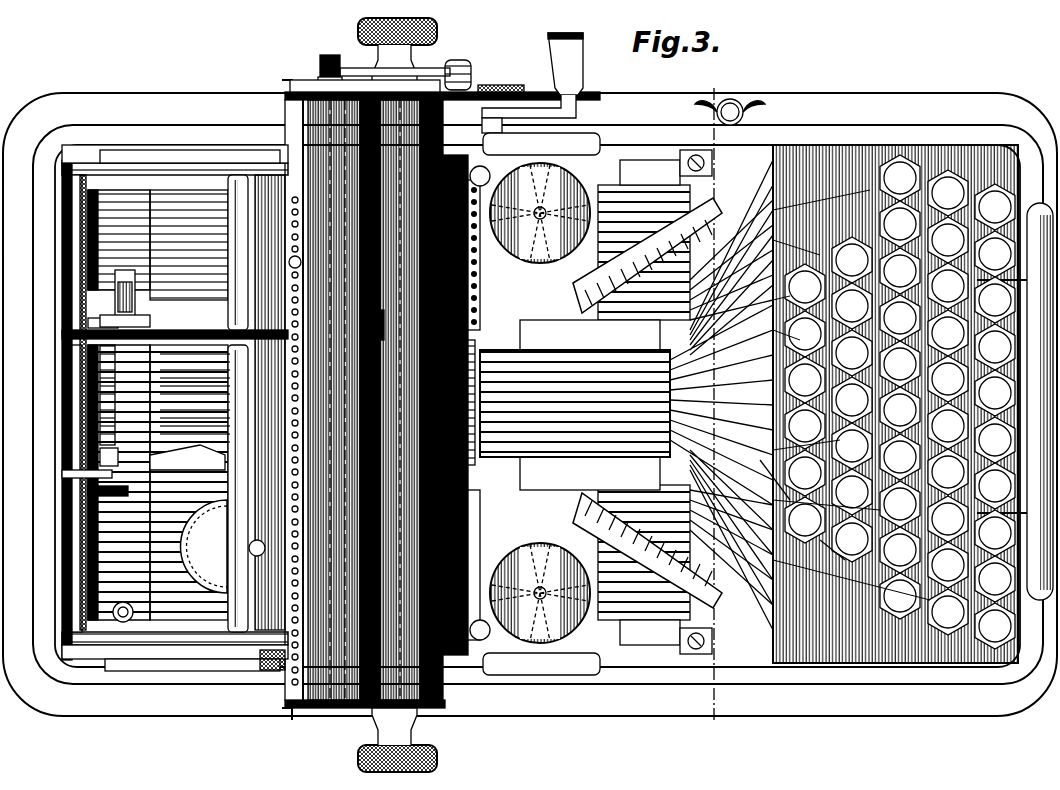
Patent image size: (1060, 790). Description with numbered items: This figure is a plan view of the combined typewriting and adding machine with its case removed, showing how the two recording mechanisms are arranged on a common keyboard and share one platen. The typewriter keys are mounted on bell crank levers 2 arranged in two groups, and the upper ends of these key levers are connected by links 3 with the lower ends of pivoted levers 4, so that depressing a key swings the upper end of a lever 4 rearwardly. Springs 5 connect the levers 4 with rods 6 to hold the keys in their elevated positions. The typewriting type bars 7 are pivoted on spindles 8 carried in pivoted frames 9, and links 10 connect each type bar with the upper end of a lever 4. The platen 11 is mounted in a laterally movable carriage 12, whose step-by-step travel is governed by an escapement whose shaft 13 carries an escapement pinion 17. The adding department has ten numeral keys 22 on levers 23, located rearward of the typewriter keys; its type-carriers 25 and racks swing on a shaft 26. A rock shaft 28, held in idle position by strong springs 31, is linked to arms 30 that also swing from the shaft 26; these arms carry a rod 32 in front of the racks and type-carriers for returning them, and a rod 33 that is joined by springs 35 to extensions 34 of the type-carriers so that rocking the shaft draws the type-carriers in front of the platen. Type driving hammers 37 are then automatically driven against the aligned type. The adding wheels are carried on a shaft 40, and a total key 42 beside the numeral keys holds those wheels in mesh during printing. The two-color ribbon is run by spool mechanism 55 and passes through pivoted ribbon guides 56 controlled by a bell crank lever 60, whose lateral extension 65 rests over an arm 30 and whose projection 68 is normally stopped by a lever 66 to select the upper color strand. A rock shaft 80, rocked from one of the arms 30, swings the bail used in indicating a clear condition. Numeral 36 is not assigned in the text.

The bell crank levers 2 is at (735, 235).
The links 3 is at (610, 315).
The levers 4 is at (130, 200).
The springs 5 is at (730, 410).
The rods 6 is at (440, 524).
The typewriting type bars 7 is at (940, 575).
The spindles 8 is at (440, 240).
The pivoted frames 9 is at (440, 270).
The links 10 is at (298, 243).
The platen 11 is at (355, 425).
The carriage 12 is at (284, 98).
The rod or shaft 13 is at (168, 648).
The escapement pinion 17 is at (85, 303).
The numeral keys 22 is at (818, 270).
The key levers 23 is at (700, 370).
The type-carriers 25 is at (392, 372).
The shaft 26 is at (298, 298).
The rock shaft 28 is at (520, 82).
The arms 30 is at (75, 346).
The springs 31 is at (254, 402).
The rod 32 is at (790, 522).
The rod 33 is at (100, 392).
The extensions 34 is at (322, 400).
The springs 35 is at (100, 414).
The crank handle 36 is at (582, 66).
The type driving hammers 37 is at (700, 392).
The shaft 40 is at (204, 546).
The key 42 is at (839, 564).
The spool mechanism 55 is at (540, 403).
The ribbon guides 56 is at (266, 541).
The bell crank lever 60 is at (197, 460).
The lateral extension 65 is at (100, 455).
The lever 66 is at (95, 478).
The projection 68 is at (95, 500).
The rock shaft 80 is at (560, 409).